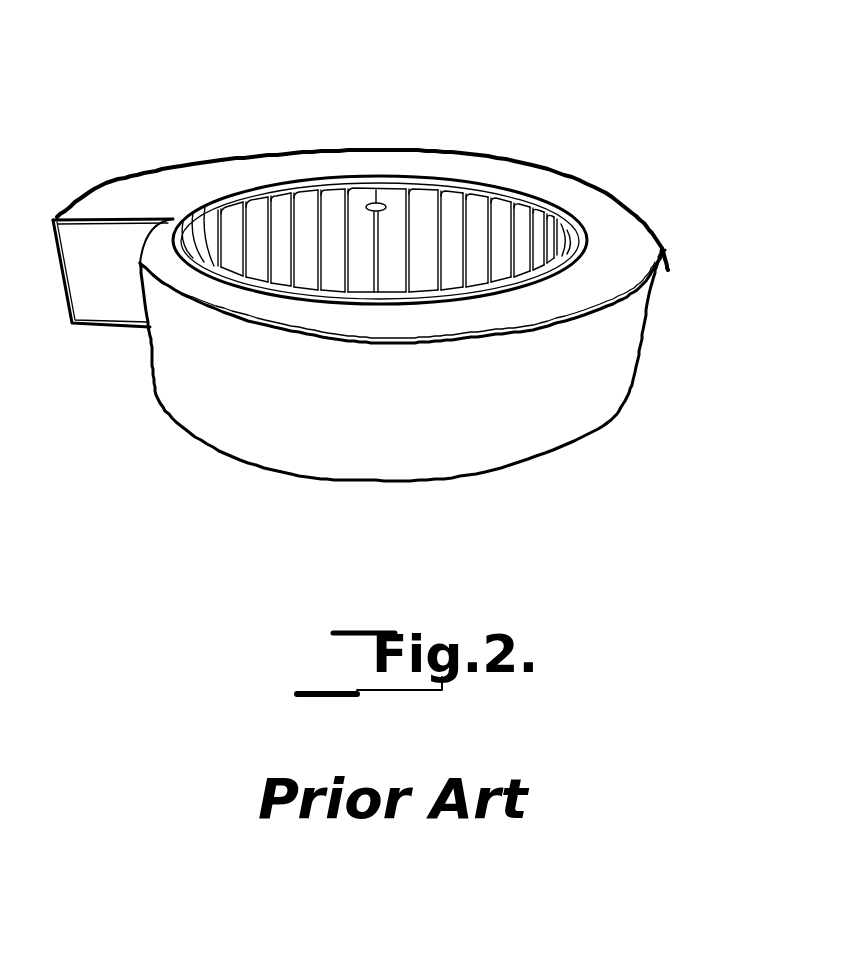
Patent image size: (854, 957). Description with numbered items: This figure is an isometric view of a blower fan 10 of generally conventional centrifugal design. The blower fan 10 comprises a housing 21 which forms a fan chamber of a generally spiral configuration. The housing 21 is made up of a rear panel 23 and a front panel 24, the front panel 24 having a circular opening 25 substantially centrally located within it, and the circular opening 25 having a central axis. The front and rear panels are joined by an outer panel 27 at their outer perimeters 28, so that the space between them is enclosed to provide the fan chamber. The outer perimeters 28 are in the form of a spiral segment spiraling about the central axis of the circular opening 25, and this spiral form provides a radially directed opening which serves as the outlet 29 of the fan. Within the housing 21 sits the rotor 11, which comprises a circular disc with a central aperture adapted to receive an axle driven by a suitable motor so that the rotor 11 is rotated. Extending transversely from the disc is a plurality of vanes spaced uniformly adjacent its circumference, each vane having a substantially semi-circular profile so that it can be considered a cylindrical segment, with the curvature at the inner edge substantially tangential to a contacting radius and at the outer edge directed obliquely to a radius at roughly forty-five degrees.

The blower fan 10 is at (484, 124).
The rotor 11 is at (330, 213).
The housing 21 is at (543, 410).
The rear panel 23 is at (123, 303).
The front panel 24 is at (243, 303).
The circular opening 25 is at (587, 240).
The outer panel 27 is at (617, 343).
The outer perimeters 28 is at (563, 173).
The outlet 29 is at (120, 218).